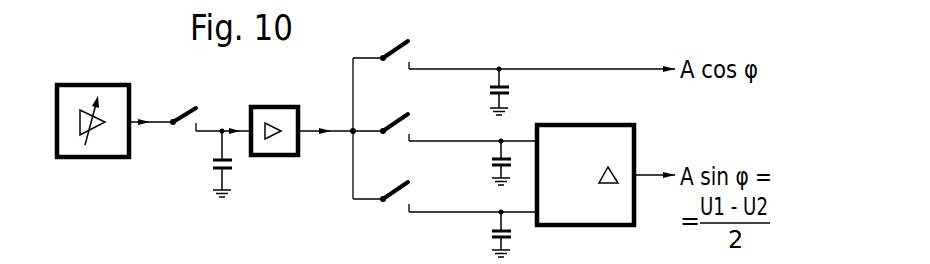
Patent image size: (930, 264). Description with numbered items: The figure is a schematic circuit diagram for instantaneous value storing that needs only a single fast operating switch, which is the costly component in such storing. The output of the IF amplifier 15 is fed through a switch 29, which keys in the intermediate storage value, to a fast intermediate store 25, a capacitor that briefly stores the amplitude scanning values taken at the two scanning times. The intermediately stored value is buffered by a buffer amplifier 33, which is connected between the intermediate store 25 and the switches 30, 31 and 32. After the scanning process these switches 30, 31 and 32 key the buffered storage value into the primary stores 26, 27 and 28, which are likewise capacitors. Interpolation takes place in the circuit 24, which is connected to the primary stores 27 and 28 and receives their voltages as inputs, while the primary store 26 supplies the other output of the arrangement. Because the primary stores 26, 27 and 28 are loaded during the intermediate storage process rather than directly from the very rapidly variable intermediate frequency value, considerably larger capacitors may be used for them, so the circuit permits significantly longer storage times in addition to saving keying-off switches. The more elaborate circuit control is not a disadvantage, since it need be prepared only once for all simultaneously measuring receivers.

The IF amplifier 15 is at (98, 62).
The circuit 24 is at (580, 125).
The fast intermediate store 25 is at (209, 164).
The primary store 26 is at (513, 92).
The primary store 27 is at (512, 163).
The primary store 28 is at (487, 234).
The switch 29 is at (197, 113).
The switch 30 is at (408, 53).
The switch 31 is at (408, 125).
The switch 32 is at (409, 195).
The buffer amplifier 33 is at (275, 107).